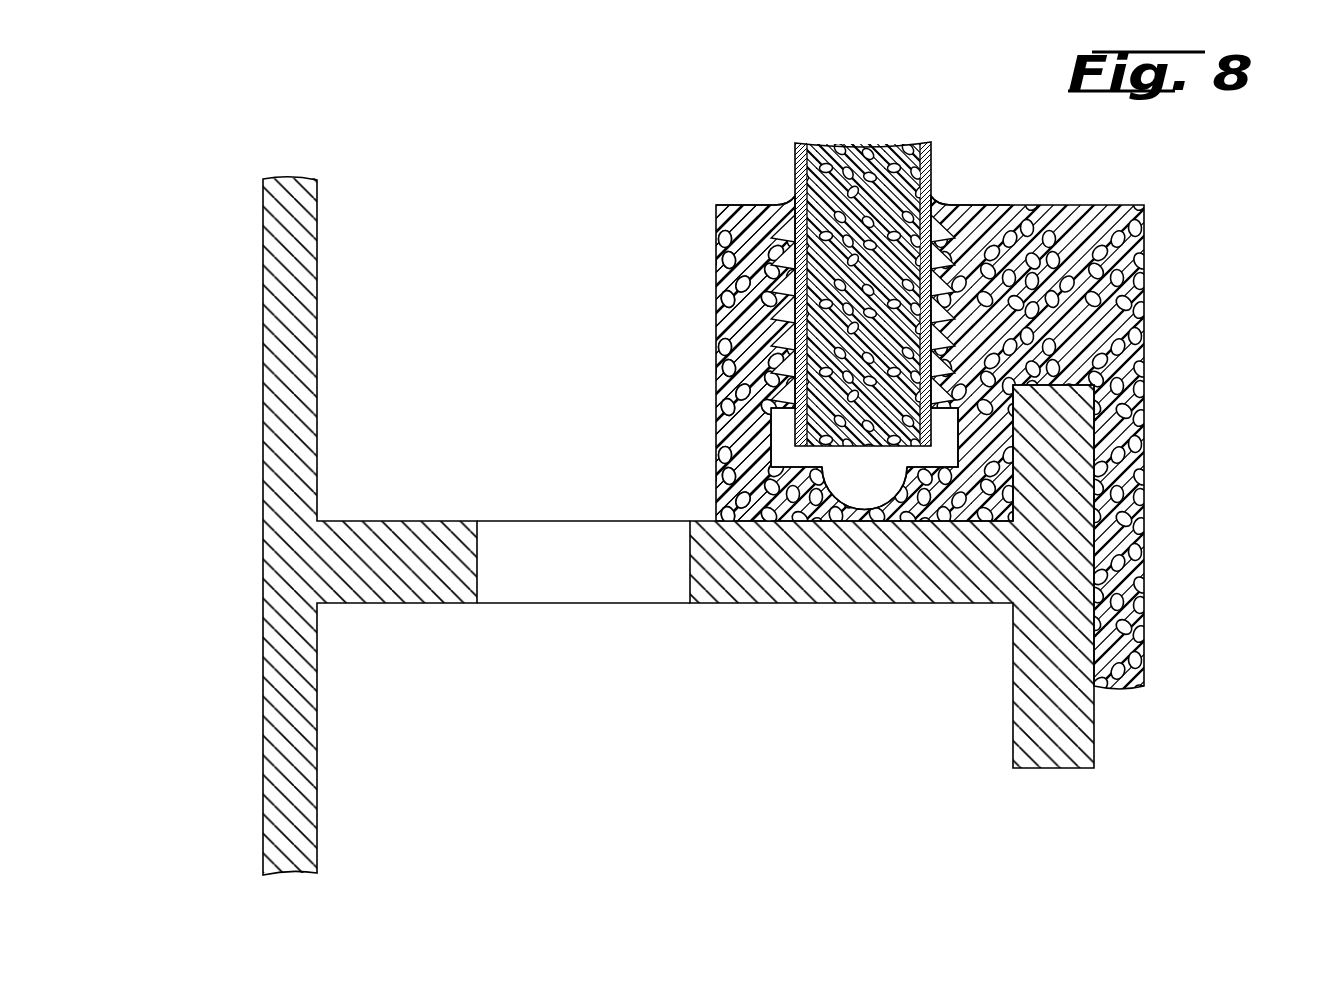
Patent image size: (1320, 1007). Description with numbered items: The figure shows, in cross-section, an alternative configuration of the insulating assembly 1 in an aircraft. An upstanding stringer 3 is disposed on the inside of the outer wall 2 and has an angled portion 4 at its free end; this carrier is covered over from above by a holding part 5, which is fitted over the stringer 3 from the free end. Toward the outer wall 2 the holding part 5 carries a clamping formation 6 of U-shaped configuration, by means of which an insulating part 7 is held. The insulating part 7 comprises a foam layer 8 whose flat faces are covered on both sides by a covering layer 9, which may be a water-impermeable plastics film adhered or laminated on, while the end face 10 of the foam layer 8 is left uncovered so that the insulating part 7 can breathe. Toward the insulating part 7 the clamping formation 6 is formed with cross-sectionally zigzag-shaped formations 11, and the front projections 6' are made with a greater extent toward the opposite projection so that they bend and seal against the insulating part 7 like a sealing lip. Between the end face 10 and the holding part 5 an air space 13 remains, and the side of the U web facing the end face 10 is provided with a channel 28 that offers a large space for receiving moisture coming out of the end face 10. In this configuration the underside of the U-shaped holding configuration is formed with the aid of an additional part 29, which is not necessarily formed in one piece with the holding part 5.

The insulating assembly 1 is at (1208, 703).
The outer wall 2 is at (272, 457).
The stringer 3 is at (888, 580).
The angled portion 4 is at (1080, 735).
The holding part 5 is at (1127, 356).
The clamping formation 6 is at (848, 149).
The front projection 6' is at (856, 151).
The insulating part 7 is at (893, 128).
The foam layer 8 is at (862, 162).
The covering layer 9 is at (805, 143).
The end face 10 is at (933, 405).
The zigzag-shaped formation 11 is at (790, 258).
The air space 13 is at (885, 453).
The channel 28 is at (838, 500).
The additional part 29 is at (733, 305).